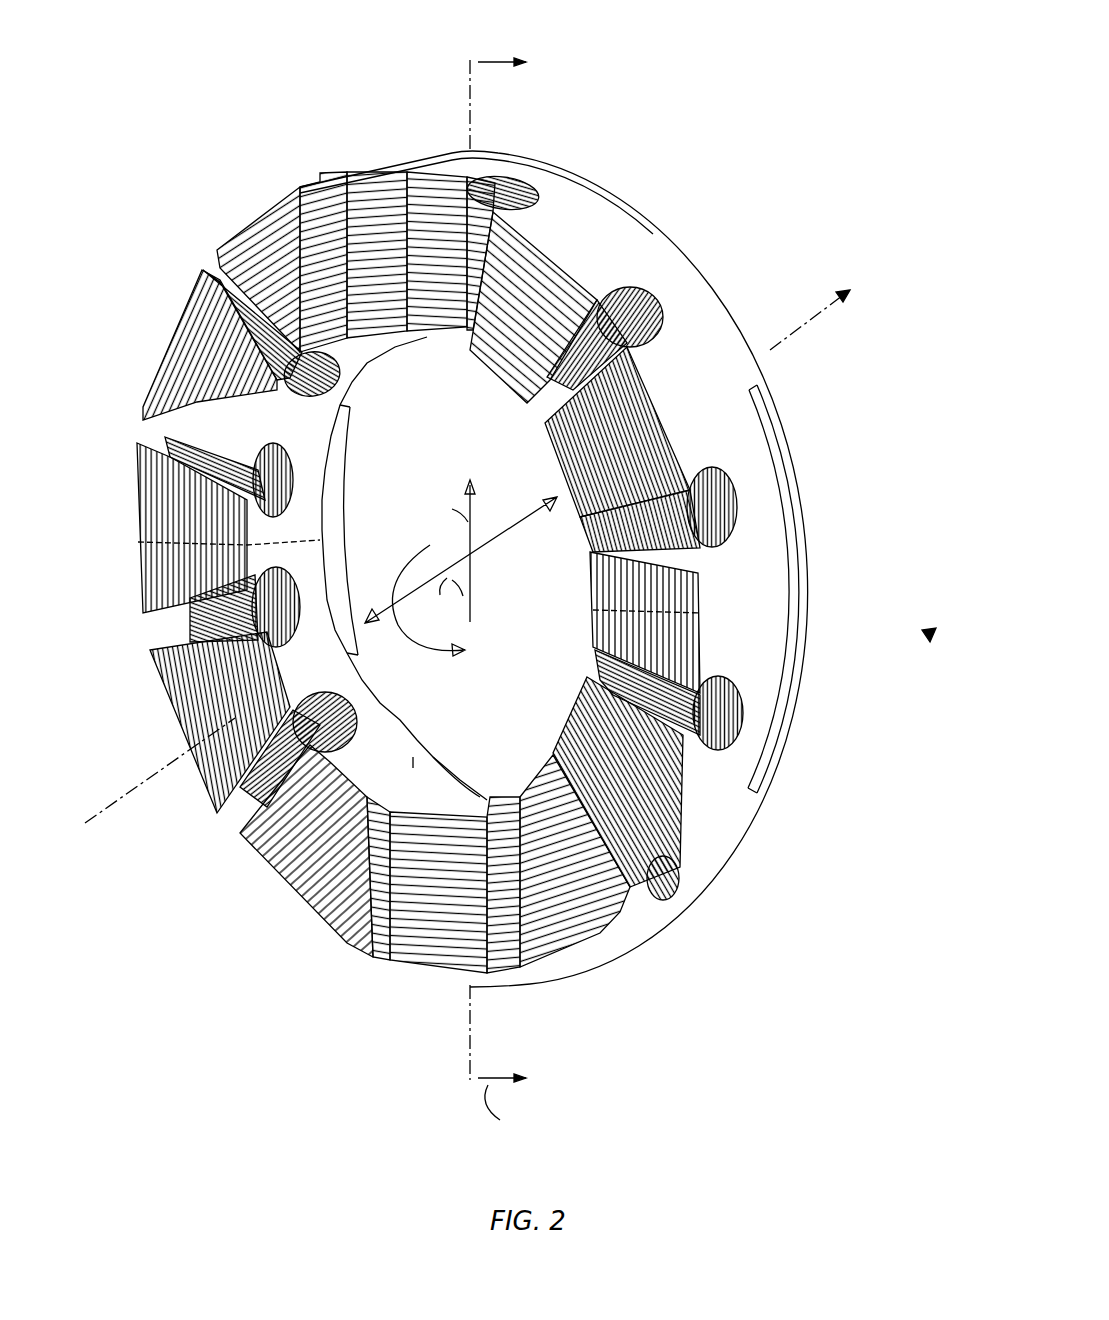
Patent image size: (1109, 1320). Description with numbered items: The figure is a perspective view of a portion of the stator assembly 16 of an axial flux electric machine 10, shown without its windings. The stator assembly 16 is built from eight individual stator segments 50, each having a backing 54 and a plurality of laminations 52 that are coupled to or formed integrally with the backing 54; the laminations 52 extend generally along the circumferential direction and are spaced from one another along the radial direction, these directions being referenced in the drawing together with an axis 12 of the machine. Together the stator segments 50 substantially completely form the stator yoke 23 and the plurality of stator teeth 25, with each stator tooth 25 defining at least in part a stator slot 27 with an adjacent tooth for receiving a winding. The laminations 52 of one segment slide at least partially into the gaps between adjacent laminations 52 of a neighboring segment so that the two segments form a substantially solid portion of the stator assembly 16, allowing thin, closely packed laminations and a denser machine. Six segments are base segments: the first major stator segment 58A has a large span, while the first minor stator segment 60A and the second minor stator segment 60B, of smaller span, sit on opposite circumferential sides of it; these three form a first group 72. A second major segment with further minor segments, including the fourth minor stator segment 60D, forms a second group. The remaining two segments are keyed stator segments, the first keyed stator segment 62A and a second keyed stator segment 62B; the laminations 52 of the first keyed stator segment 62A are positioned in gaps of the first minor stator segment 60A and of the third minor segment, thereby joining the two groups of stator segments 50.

The electric machine 10 is at (745, 135).
The central axis 12 is at (800, 322).
The stator assembly 16 is at (680, 80).
The stator yoke 23 is at (657, 228).
The stator teeth 25 is at (560, 200).
The stator slot 27 is at (682, 276).
The stator segments 50 is at (538, 534).
The laminations 52 is at (690, 568).
The backing 54 is at (760, 370).
The first major stator segment 58A is at (808, 523).
The first minor stator segment 60A is at (710, 307).
The second minor stator segment 60B is at (748, 857).
The fourth minor stator segment 60D is at (357, 765).
The first keyed stator segment 62A is at (603, 177).
The core segment 62B is at (473, 790).
The first group of stator segments 72 is at (930, 642).